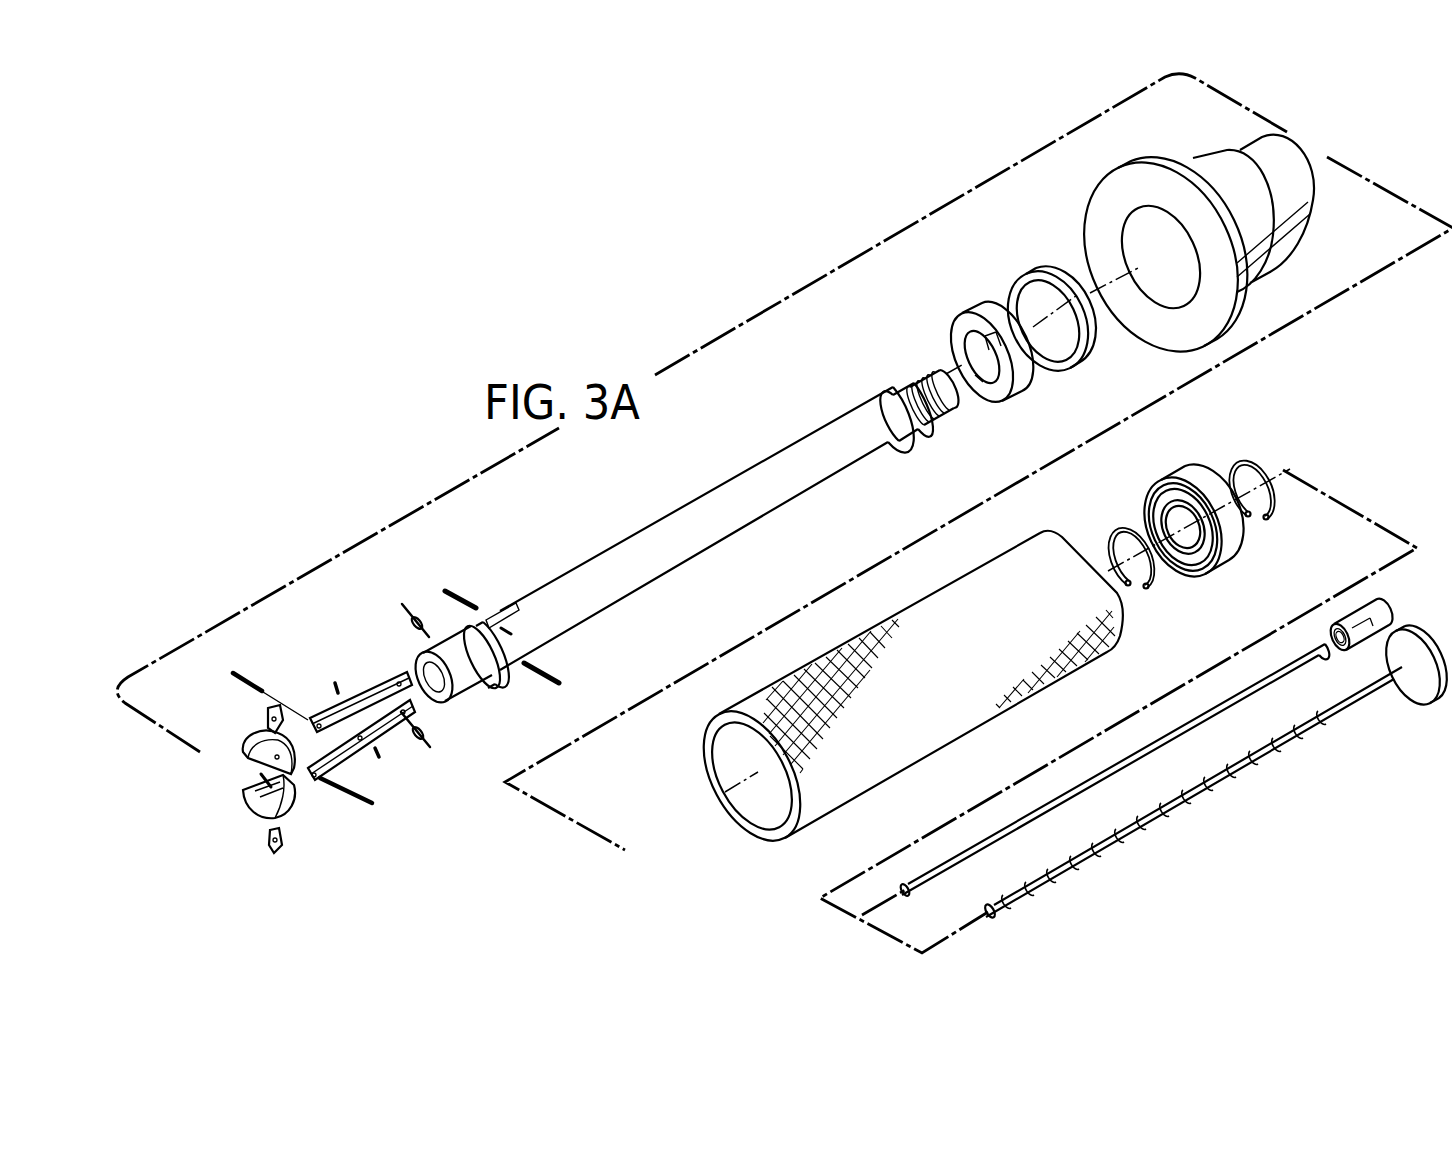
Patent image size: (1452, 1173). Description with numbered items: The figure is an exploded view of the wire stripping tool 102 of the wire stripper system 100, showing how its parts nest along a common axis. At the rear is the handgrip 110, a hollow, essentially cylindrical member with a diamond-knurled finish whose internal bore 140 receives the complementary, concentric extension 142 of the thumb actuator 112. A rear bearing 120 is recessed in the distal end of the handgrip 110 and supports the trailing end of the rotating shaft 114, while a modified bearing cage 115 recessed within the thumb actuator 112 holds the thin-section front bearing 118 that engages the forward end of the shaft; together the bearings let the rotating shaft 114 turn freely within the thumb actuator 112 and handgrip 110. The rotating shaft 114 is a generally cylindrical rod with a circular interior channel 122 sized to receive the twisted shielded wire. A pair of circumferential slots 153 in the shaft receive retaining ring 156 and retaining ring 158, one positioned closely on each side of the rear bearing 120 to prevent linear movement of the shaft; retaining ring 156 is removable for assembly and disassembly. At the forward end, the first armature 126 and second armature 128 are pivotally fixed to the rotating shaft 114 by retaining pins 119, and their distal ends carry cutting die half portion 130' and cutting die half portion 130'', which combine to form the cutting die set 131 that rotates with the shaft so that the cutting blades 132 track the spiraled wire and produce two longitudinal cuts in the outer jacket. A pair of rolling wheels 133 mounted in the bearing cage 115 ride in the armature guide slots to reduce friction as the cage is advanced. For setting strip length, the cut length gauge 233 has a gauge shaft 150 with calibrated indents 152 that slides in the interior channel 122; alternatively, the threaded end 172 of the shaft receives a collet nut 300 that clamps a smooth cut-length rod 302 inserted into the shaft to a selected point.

The wire stripper system 100 is at (370, 431).
The wire stripping tool 102 is at (400, 491).
The handgrip 110 is at (893, 745).
The thumb actuator 112 is at (1161, 142).
The rotating shaft 114 is at (671, 517).
The bearing cage 115 is at (958, 330).
The front bearing 118 is at (1079, 366).
The retaining pins 119 is at (456, 592).
The rear bearing 120 is at (1233, 558).
The interior channel 122 is at (433, 700).
The first armature 126 is at (365, 690).
The second armature 128 is at (355, 757).
The cutting die half portion 130' is at (232, 758).
The cutting die half portion 130'' is at (235, 808).
The cutting die set 131 is at (222, 739).
The cutting blades 132 is at (270, 700).
The rolling wheels 133 is at (413, 622).
The internal bore 140 is at (735, 758).
The extension 142 is at (1287, 225).
The gauge shaft 150 is at (1270, 760).
The calibrated indents 152 is at (1220, 785).
The circumferential slots 153 is at (886, 410).
The retaining ring 156 is at (1240, 455).
The retaining ring 158 is at (1148, 590).
The threaded end 172 is at (915, 378).
The cut length gauge 233 is at (1373, 703).
The collet nut 300 is at (1392, 604).
The cut-length rod 302 is at (1230, 708).